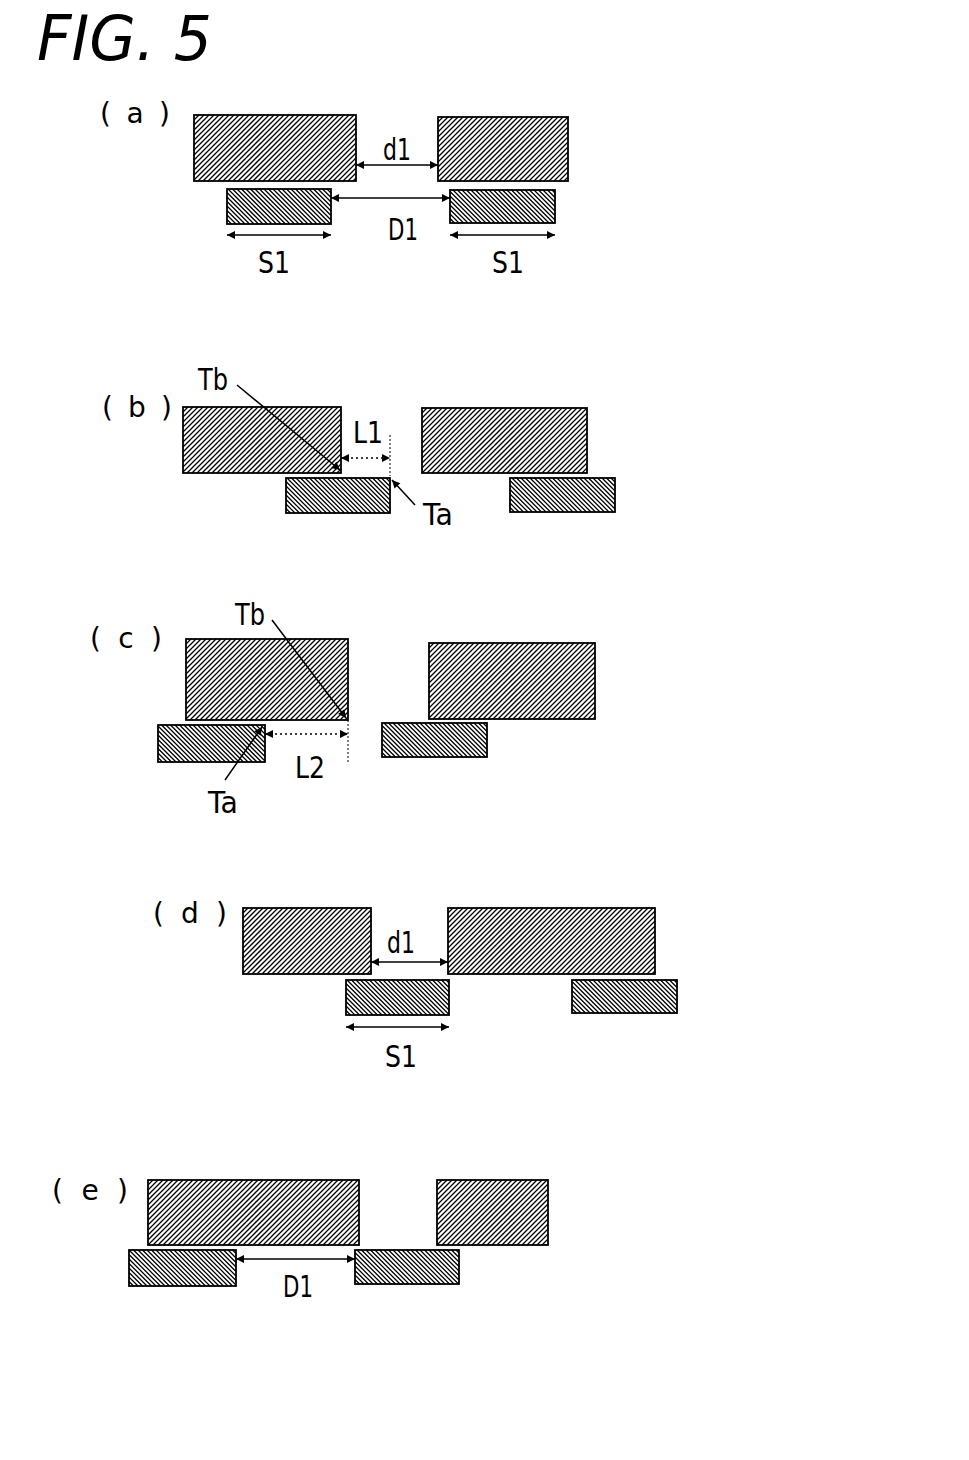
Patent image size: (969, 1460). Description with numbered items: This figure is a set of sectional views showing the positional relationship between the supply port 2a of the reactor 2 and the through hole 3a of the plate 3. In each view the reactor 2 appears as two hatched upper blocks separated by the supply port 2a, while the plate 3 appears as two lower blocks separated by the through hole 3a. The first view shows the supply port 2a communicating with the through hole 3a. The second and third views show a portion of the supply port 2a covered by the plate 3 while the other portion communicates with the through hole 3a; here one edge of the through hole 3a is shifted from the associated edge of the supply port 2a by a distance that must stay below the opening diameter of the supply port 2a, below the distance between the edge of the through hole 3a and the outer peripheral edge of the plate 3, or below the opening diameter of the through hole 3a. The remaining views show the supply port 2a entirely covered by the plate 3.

The reactor 2 is at (528, 143).
The supply port 2a is at (413, 122).
The plate 3 is at (537, 210).
The through hole 3a is at (363, 227).